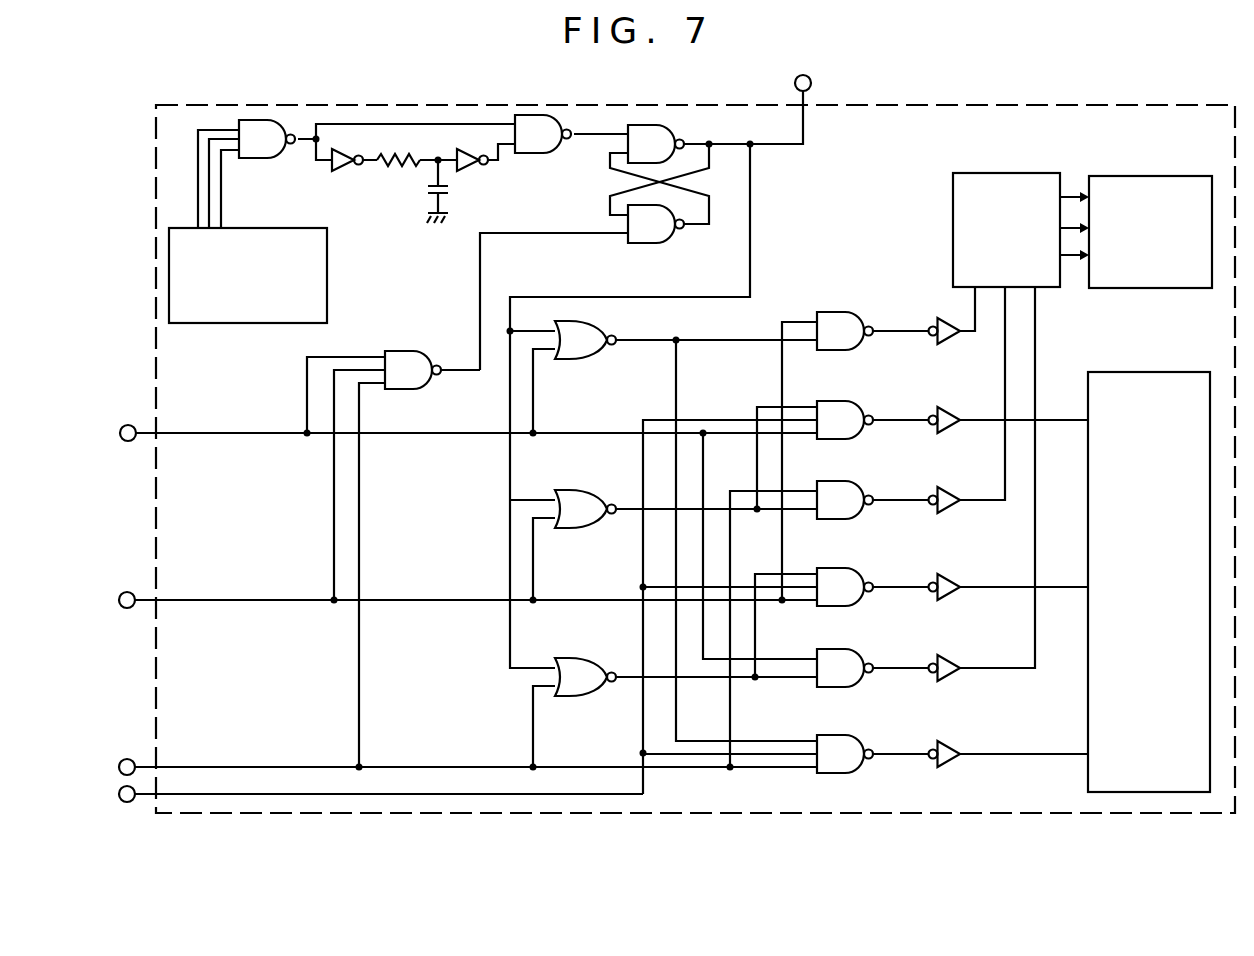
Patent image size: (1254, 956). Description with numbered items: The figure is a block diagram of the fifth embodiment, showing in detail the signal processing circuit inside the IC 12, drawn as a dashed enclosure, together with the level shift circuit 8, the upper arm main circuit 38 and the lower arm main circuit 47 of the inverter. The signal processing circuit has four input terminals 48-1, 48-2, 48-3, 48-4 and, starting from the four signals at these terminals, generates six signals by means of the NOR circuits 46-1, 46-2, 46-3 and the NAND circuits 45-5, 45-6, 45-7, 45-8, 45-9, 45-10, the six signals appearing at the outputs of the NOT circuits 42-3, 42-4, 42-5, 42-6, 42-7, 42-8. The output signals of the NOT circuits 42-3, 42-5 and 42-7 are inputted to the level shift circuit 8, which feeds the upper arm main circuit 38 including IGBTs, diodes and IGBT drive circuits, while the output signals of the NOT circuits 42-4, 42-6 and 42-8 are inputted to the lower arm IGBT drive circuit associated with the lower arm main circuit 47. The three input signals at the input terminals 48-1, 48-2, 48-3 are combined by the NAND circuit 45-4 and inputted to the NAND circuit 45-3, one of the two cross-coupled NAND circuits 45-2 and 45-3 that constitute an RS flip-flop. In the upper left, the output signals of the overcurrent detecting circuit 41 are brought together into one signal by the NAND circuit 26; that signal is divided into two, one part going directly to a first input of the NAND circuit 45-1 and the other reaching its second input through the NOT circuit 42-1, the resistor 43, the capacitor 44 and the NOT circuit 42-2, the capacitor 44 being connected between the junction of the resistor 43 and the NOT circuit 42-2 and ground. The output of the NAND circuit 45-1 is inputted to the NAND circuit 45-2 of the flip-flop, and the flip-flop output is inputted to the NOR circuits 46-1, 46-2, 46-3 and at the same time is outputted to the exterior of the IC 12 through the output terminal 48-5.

The level shift circuit 8 is at (953, 187).
The IC 12 is at (1144, 103).
The NAND circuit 26 is at (262, 158).
The upper arm main circuit 38 is at (1135, 176).
The overcurrent detecting circuit 41 is at (327, 275).
The NOT circuit 42-1 is at (340, 171).
The NOT circuit 42-2 is at (468, 171).
The NOT circuit 42-3 is at (950, 342).
The NOT circuit 42-4 is at (950, 431).
The NOT circuit 42-5 is at (950, 511).
The NOT circuit 42-6 is at (950, 598).
The NOT circuit 42-7 is at (950, 679).
The NOT circuit 42-8 is at (950, 765).
The resistor 43 is at (400, 166).
The capacitor 44 is at (448, 190).
The NAND circuit 45-1 is at (555, 153).
The NAND circuit 45-2 is at (675, 127).
The NAND circuit 45-3 is at (660, 244).
The NAND circuit 45-4 is at (410, 351).
The NAND circuit 45-5 is at (830, 311).
The NAND circuit 45-6 is at (830, 401).
The NAND circuit 45-7 is at (830, 481).
The NAND circuit 45-8 is at (830, 568).
The NAND circuit 45-9 is at (830, 649).
The NAND circuit 45-10 is at (830, 735).
The NOR circuit 46-1 is at (592, 359).
The NOR circuit 46-2 is at (585, 528).
The NOR circuit 46-3 is at (585, 696).
The lower arm main circuit 47 is at (1140, 372).
The input terminal 48-1 is at (130, 441).
The input terminal 48-2 is at (128, 608).
The input terminal 48-3 is at (128, 759).
The input terminal 48-4 is at (128, 802).
The output terminal 48-5 is at (811, 83).